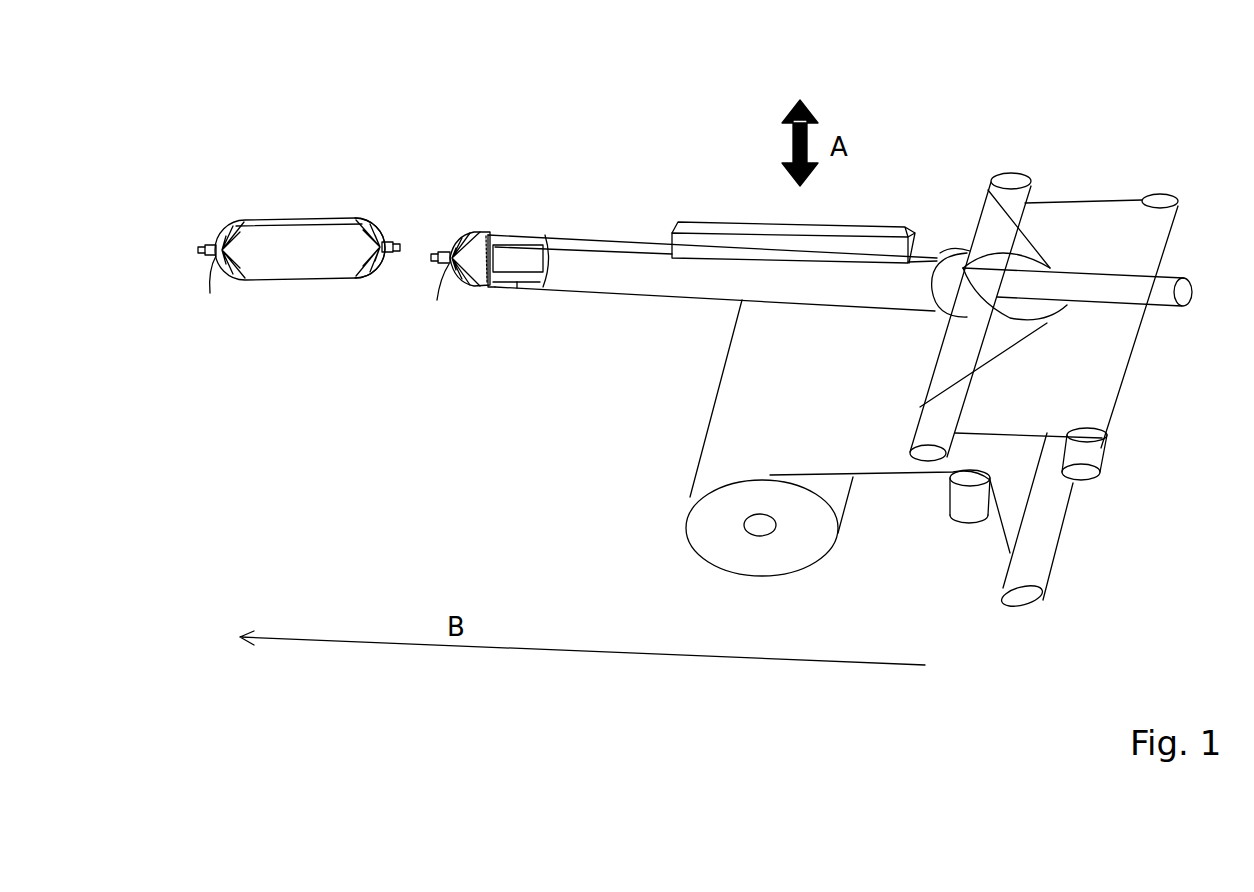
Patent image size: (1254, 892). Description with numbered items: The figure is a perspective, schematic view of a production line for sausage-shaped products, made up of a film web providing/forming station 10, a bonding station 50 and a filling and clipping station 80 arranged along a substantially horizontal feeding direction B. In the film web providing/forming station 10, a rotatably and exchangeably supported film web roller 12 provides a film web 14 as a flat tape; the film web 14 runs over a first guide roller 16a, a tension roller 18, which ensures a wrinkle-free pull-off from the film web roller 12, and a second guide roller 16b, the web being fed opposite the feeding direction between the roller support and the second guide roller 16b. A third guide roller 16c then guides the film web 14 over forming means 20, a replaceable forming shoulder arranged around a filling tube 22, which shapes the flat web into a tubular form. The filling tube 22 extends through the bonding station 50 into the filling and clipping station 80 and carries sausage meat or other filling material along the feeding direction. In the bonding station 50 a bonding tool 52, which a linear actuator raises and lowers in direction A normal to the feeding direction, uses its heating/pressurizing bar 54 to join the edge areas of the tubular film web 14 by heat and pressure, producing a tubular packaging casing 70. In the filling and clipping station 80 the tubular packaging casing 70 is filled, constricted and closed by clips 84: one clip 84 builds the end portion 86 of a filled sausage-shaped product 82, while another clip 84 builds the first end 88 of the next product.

The film web providing/forming station 10 is at (1210, 97).
The film web roller 12 is at (808, 565).
The film web 14 is at (815, 368).
The first guide roller 16a is at (968, 517).
The second guide roller 16b is at (1082, 478).
The third guide roller 16c is at (930, 457).
The tension roller 18 is at (1015, 598).
The forming means 20 is at (1043, 313).
The filling tube 22 is at (530, 287).
The bonding station 50 is at (922, 97).
The bonding tool 52 is at (741, 200).
The heating/pressurizing bar 54 is at (772, 243).
The tubular packaging casing 70 is at (613, 253).
The filling and clipping station 80 is at (560, 97).
The sausage-shaped product 82 is at (293, 258).
The clip 84 is at (400, 222).
The end portion 86 is at (360, 268).
The first end 88 is at (477, 278).